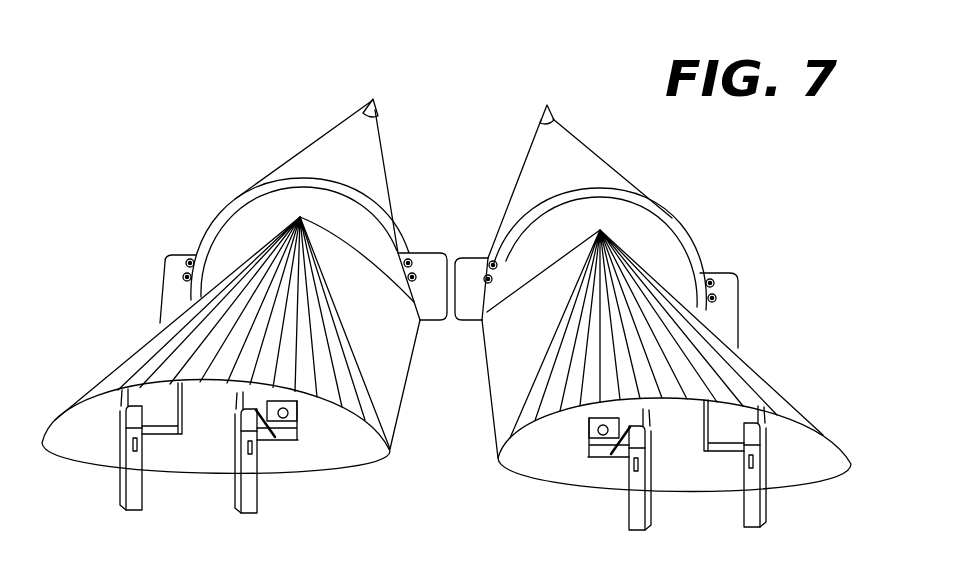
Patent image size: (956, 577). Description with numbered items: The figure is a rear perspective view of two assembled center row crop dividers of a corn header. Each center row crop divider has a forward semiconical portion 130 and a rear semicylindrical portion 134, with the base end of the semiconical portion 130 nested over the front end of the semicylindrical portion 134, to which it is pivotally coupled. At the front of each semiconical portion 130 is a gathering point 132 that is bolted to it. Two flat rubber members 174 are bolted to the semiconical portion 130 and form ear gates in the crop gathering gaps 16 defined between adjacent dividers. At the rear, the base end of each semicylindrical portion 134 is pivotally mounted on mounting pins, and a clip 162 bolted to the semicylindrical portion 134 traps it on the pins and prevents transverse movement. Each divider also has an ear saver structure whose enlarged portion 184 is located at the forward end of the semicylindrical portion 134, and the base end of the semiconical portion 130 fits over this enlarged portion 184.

The crop gathering gap 16 is at (468, 85).
The forward semiconical portion 130 is at (526, 160).
The gathering point 132 is at (540, 112).
The semicylindrical portion 134 is at (100, 372).
The clip 162 is at (277, 442).
The flat rubber member 174 is at (158, 273).
The enlarged portion 184 is at (231, 213).